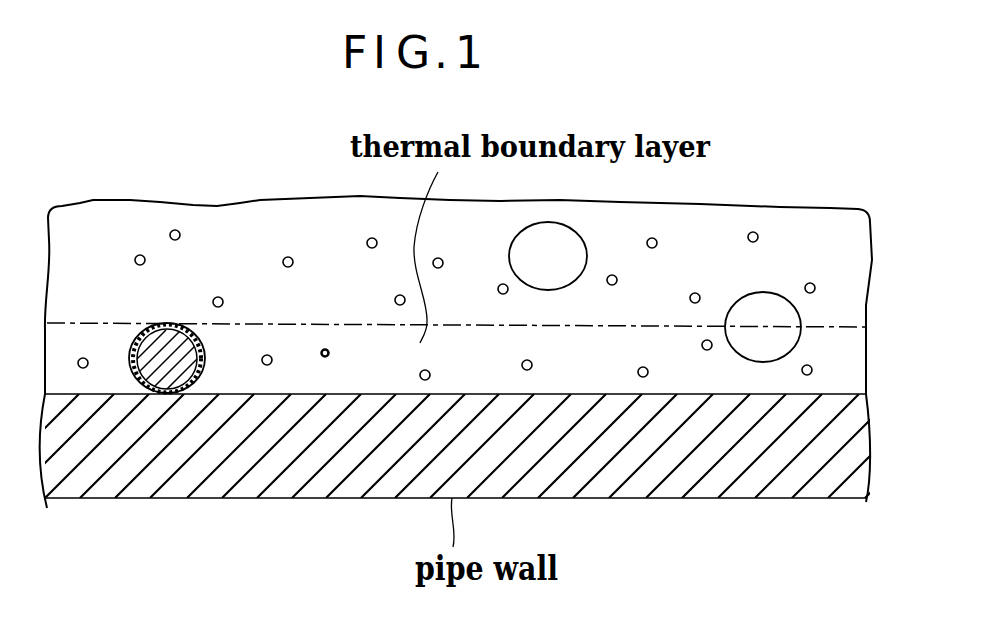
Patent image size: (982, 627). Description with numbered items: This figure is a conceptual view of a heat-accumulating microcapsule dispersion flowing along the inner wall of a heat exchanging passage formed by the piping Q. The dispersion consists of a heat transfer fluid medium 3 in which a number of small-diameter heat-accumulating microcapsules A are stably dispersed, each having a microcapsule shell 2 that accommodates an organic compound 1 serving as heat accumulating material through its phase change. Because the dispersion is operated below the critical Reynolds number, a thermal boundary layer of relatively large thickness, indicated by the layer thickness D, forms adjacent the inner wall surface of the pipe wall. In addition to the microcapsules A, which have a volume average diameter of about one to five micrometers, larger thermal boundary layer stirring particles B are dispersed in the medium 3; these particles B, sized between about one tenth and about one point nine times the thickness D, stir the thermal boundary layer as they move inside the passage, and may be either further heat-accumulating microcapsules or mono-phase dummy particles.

The organic compound 1 is at (145, 339).
The microcapsule shell 2 is at (203, 348).
The heat transfer fluid medium 3 is at (263, 213).
The small-diameter heat-accumulating microcapsule A is at (218, 293).
The thermal boundary layer stirring particle B is at (165, 321).
The layer thickness of thermal boundary layer D is at (588, 326).
The piping Q is at (203, 498).